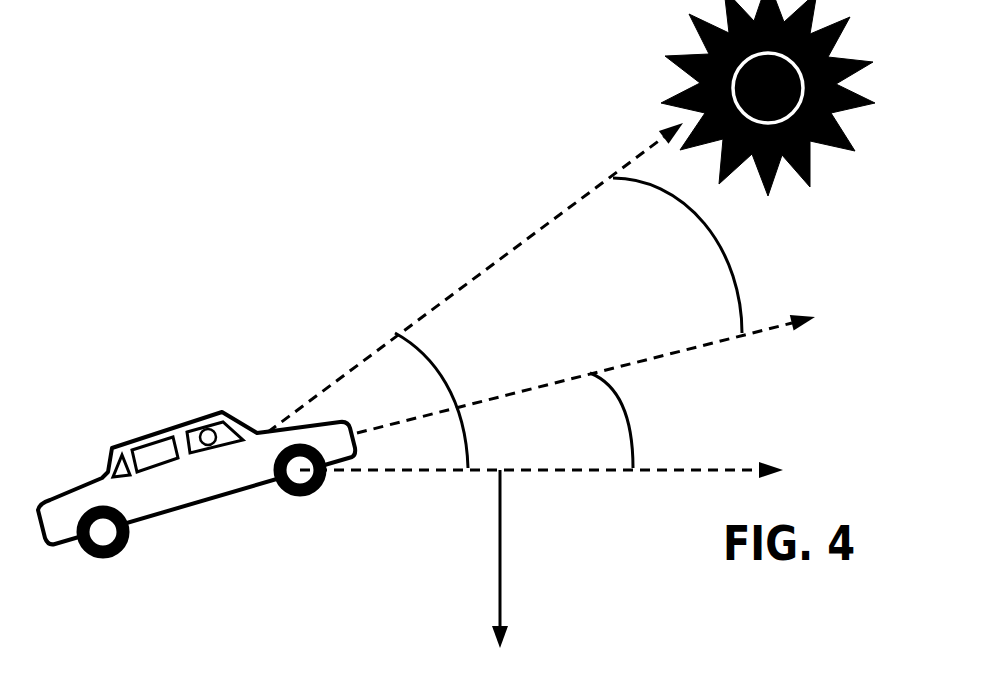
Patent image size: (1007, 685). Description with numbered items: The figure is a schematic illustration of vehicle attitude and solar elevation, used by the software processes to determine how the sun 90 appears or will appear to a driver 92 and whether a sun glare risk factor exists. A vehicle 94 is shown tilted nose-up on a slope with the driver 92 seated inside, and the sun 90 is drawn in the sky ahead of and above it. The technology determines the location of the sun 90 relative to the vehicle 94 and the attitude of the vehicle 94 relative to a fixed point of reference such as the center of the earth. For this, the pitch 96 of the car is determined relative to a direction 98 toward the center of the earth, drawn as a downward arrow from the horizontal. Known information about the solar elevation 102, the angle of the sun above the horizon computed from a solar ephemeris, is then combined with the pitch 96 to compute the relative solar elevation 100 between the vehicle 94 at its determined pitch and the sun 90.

The sun 90 is at (697, 52).
The driver 92 is at (187, 432).
The vehicle 94 is at (185, 510).
The pitch 96 is at (755, 407).
The direction toward the center of the earth 98 is at (500, 577).
The relative solar elevation 100 is at (838, 218).
The solar elevation 102 is at (588, 300).